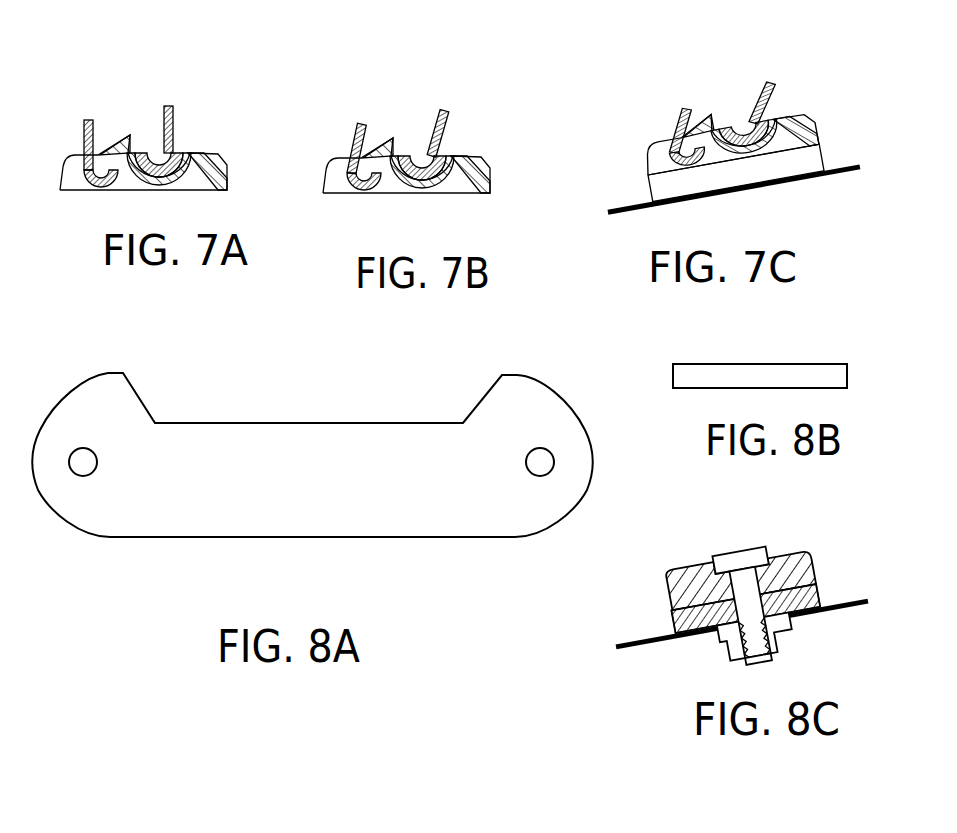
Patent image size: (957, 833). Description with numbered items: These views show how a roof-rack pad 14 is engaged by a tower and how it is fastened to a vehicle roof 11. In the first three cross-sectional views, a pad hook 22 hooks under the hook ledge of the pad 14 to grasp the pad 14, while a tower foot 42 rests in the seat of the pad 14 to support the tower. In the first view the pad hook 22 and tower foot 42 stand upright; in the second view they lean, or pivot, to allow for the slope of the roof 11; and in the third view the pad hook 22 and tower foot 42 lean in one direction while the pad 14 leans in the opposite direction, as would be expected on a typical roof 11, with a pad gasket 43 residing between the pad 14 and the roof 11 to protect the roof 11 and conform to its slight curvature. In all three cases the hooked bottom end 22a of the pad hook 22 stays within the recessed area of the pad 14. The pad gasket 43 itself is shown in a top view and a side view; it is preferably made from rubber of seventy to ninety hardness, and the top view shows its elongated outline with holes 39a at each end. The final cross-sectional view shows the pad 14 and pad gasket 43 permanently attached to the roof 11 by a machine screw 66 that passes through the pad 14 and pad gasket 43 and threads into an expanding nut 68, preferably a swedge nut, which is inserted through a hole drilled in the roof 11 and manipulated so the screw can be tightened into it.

In FIG. 7C, the roof 11 is at (605, 212).
In FIG. 8C, the roof 11 is at (848, 603).
In FIG. 7A, the pad 14 is at (145, 126).
In FIG. 7B, the pad 14 is at (407, 128).
In FIG. 7C, the pad 14 is at (731, 102).
In FIG. 8C, the pad 14 is at (722, 574).
In FIG. 7A, the pad hook 22 is at (85, 119).
In FIG. 7B, the pad hook 22 is at (365, 118).
In FIG. 7C, the pad hook 22 is at (683, 92).
In FIG. 7A, the hooked bottom end 22a is at (78, 195).
In FIG. 7B, the hooked bottom end 22a is at (347, 197).
In FIG. 7C, the hooked bottom end 22a is at (693, 163).
In FIG. 8A, the mounting holes 39a is at (82, 462).
In FIG. 7A, the tower foot 42 is at (152, 150).
In FIG. 7B, the tower foot 42 is at (412, 150).
In FIG. 7C, the tower foot 42 is at (735, 122).
In FIG. 7C, the pad gasket 43 is at (663, 192).
In FIG. 8A, the pad gasket 43 is at (277, 447).
In FIG. 8B, the pad gasket 43 is at (715, 377).
In FIG. 8C, the pad gasket 43 is at (678, 628).
In FIG. 8C, the machine screw 66 is at (737, 562).
In FIG. 8C, the expanding nut 68 is at (725, 648).